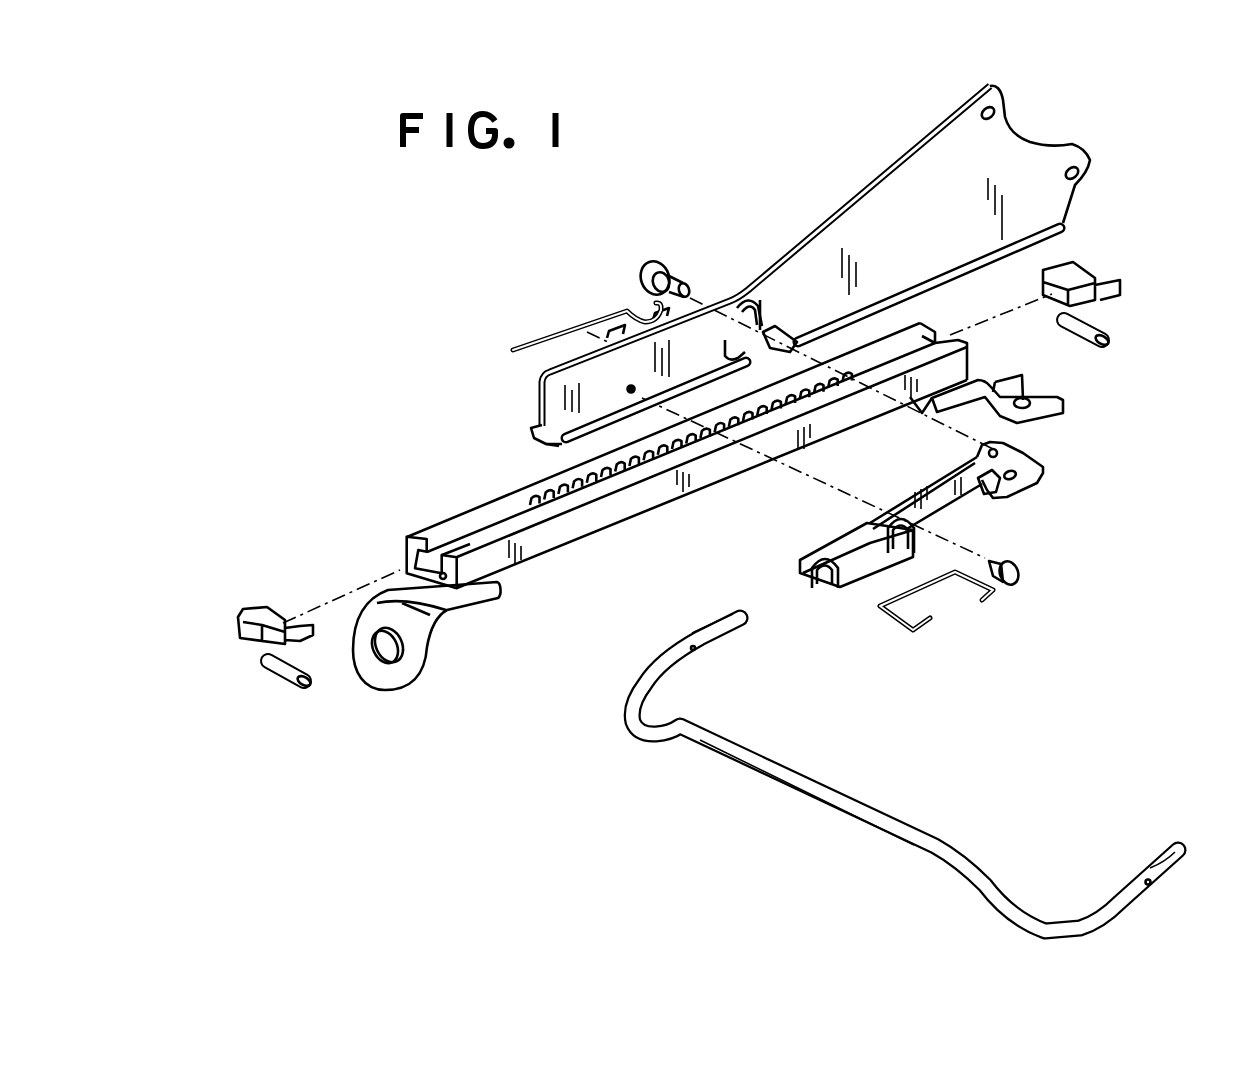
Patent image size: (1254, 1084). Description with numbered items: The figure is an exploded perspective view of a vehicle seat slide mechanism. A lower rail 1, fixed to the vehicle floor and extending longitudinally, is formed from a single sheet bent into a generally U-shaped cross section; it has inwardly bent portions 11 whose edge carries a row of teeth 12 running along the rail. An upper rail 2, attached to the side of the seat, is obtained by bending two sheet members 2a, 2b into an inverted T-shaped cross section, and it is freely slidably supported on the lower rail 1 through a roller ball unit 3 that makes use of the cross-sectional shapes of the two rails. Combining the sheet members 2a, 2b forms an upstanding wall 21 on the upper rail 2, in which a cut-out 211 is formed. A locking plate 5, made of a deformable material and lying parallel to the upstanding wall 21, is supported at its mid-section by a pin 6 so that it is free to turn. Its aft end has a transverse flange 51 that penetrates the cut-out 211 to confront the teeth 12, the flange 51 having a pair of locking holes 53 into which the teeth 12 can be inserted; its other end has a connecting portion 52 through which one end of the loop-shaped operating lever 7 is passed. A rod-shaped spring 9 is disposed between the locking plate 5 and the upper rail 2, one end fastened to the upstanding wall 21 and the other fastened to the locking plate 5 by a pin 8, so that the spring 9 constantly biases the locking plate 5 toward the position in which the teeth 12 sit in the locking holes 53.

The lower rail 1 is at (708, 506).
The inwardly bent portions 11 is at (467, 532).
The teeth 12 is at (637, 468).
The upper rail 2 is at (768, 284).
The upstanding wall 21 is at (800, 287).
The cut-out 211 is at (727, 340).
The sheet member 2a is at (560, 443).
The sheet member 2b is at (537, 430).
The roller ball unit 3 is at (1108, 315).
The locking plate 5 is at (964, 550).
The flange 51 is at (1027, 477).
The connecting portion 52 is at (863, 570).
The locking holes 53 is at (1038, 466).
The pin 6 is at (1020, 578).
The operating lever 7 is at (784, 775).
The pin 8 is at (643, 263).
The rod-shaped spring 9 is at (542, 337).